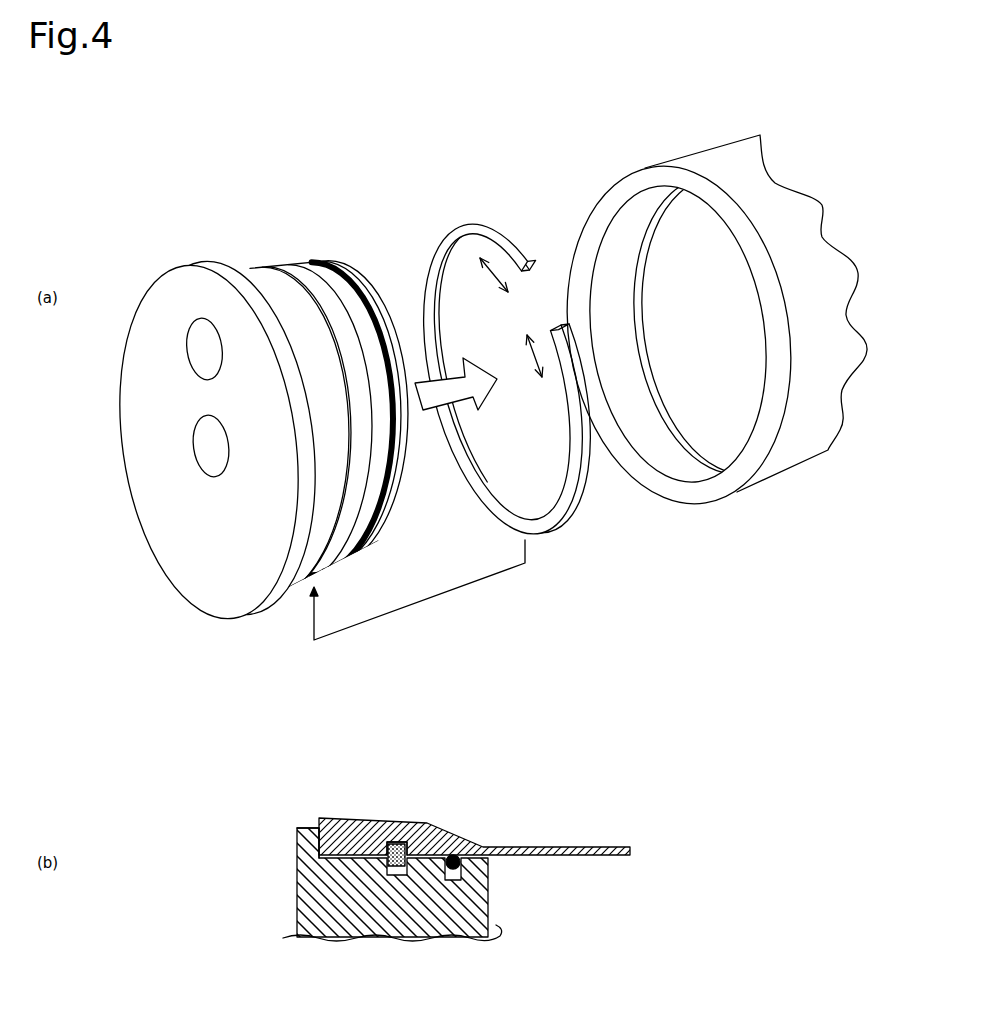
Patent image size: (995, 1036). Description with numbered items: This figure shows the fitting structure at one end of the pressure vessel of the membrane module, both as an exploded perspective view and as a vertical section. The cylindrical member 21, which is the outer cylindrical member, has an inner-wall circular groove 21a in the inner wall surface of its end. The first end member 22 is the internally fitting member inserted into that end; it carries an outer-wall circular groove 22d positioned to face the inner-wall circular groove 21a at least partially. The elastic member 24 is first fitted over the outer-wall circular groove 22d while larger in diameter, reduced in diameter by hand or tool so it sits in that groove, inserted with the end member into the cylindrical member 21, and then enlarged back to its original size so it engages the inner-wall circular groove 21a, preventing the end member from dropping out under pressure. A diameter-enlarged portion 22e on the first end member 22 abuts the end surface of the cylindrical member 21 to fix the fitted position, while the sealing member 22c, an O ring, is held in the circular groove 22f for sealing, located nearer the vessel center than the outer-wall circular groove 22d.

The cylindrical member 21 is at (593, 495).
The inner-wall circular groove 21a is at (690, 443).
The first end member 22 is at (329, 564).
The sealing member 22c is at (323, 258).
The outer-wall circular groove 22d is at (290, 268).
The diameter-enlarged portion 22e is at (184, 263).
The circular groove for sealing 22f is at (461, 866).
The elastic member 24 is at (492, 233).